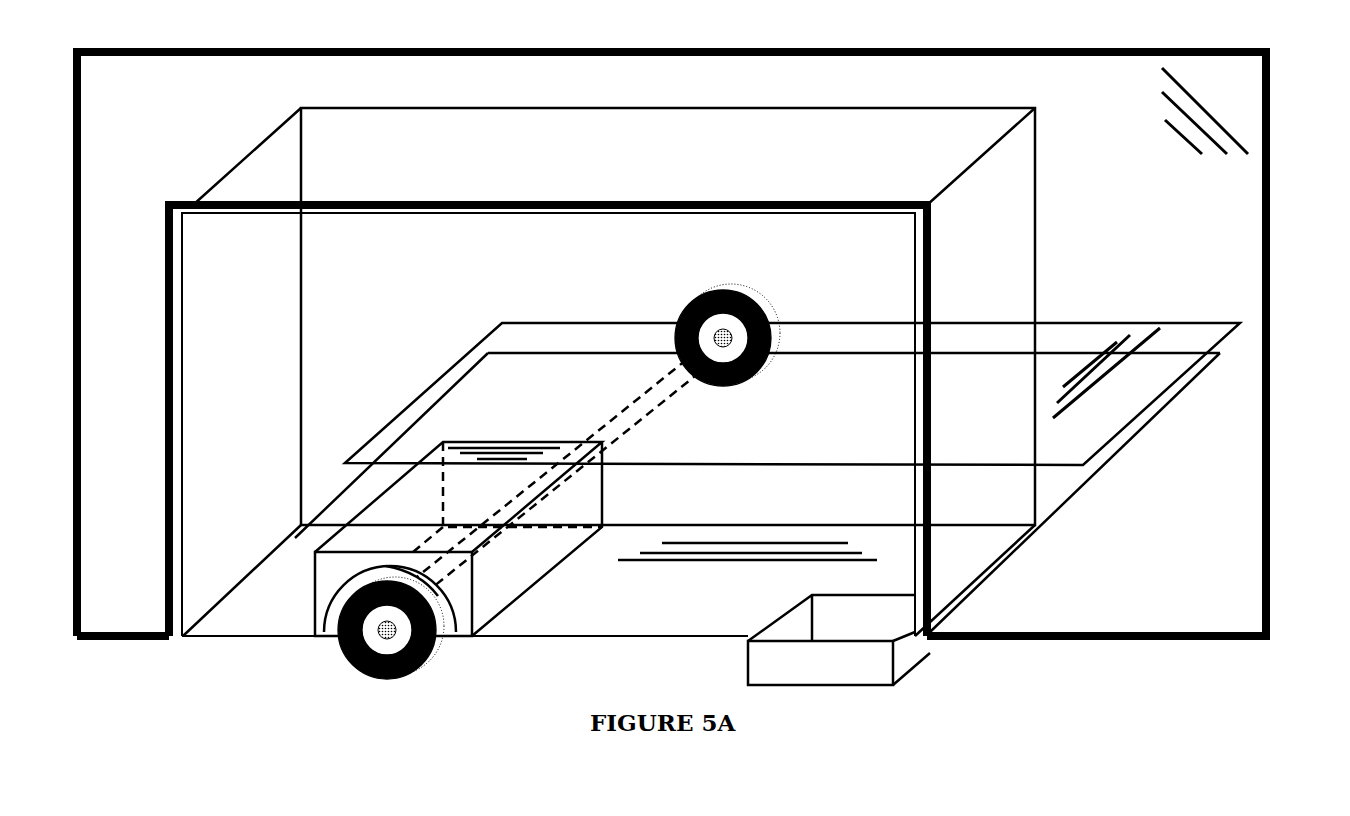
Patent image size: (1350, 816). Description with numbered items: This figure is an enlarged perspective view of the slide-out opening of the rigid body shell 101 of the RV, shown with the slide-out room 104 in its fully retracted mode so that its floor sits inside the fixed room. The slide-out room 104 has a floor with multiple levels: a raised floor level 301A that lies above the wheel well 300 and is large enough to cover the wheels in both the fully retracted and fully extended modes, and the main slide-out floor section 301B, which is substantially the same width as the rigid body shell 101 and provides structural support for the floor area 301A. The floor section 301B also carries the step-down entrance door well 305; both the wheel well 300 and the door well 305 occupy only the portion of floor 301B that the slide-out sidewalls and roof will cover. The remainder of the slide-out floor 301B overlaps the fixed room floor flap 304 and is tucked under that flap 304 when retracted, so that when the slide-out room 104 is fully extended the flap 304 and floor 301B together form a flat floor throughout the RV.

The rigid body shell 101 is at (1233, 137).
The slide-out room 104 is at (250, 153).
The wheel well 300 is at (355, 537).
The floor level above the wheel well 301A is at (497, 453).
The main slide-out floor section 301B is at (718, 543).
The fixed room floor flap 304 is at (1130, 337).
The step-down entrance door well 305 is at (902, 663).